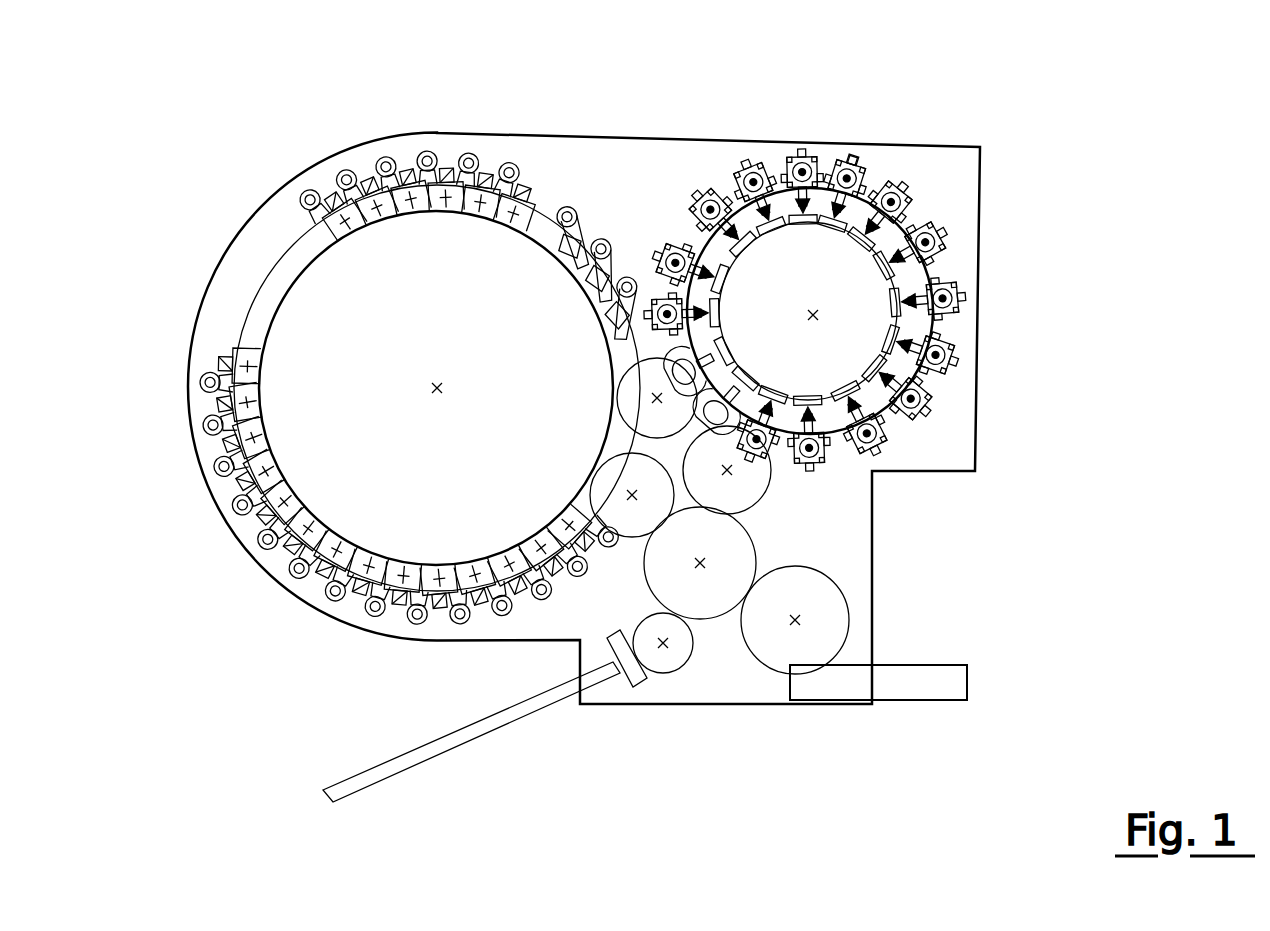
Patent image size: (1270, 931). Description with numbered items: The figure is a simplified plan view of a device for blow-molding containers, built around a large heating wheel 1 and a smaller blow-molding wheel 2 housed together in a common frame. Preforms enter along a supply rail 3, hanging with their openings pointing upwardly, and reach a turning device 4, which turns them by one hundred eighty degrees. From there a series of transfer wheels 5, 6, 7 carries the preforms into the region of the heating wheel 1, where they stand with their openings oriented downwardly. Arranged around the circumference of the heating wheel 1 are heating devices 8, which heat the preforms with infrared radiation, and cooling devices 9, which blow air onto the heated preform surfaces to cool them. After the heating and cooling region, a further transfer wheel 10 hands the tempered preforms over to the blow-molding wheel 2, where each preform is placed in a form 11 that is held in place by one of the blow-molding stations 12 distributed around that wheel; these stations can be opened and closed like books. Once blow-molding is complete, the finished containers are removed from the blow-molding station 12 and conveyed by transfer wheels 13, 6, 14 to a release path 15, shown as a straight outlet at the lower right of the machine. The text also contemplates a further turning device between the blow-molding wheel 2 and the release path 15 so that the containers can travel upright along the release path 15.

The heating wheel 1 is at (338, 288).
The blow-molding wheel 2 is at (870, 295).
The supply rail 3 is at (482, 723).
The turning device 4 is at (638, 683).
The transfer wheel 5 is at (670, 658).
The transfer wheel 6 is at (708, 603).
The transfer wheel 7 is at (640, 527).
The heating device 8 is at (348, 608).
The cooling device 9 is at (375, 618).
The transfer wheel 10 is at (655, 360).
The form 11 is at (843, 158).
The blow-molding station 12 is at (865, 163).
The transfer wheel 13 is at (752, 485).
The transfer wheel 14 is at (833, 618).
The release path 15 is at (940, 692).